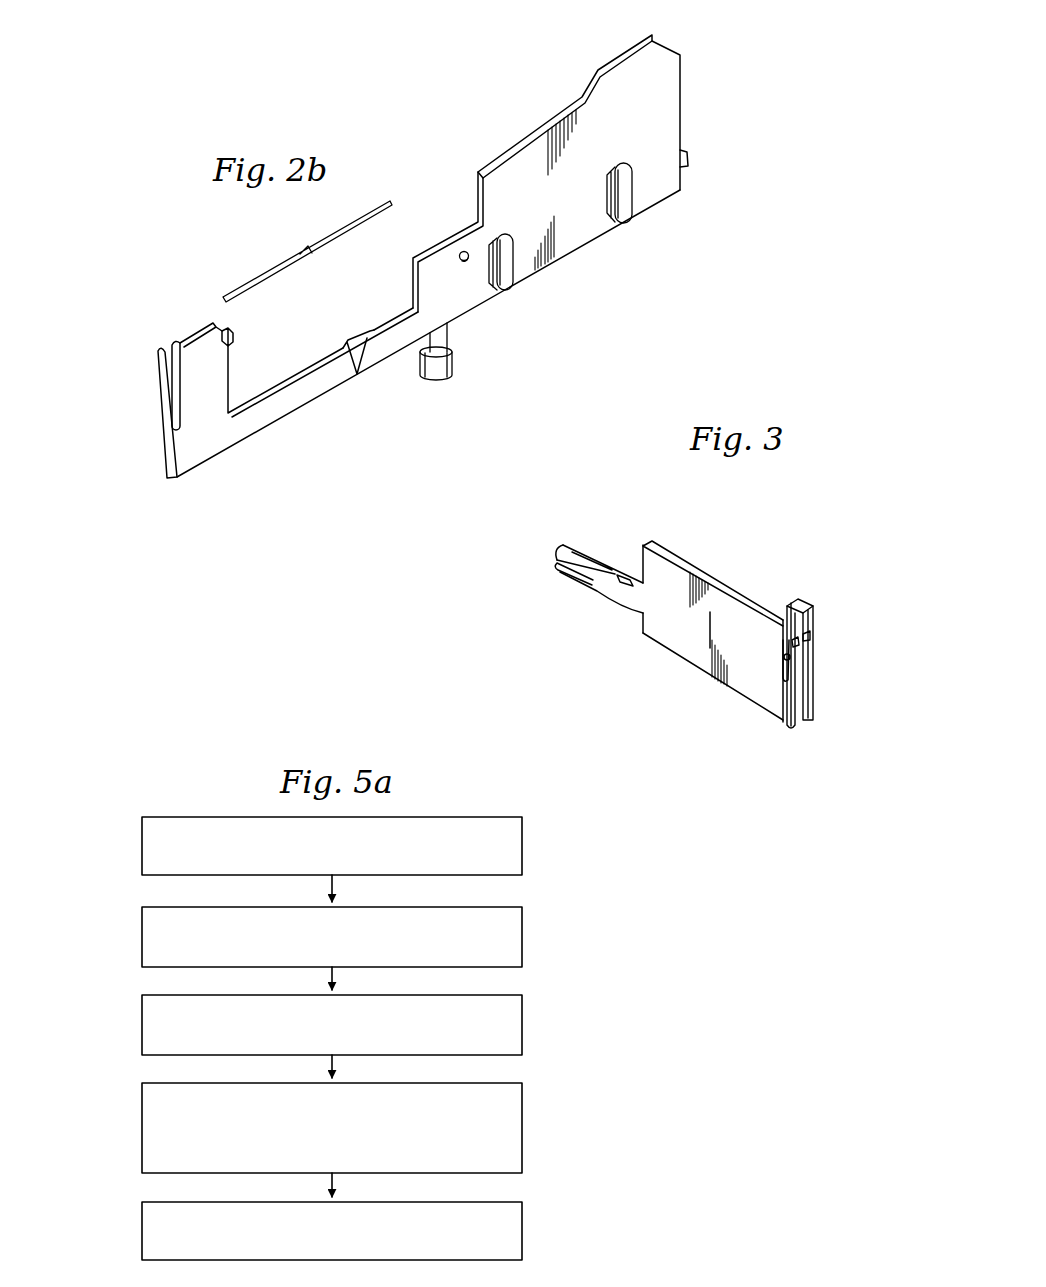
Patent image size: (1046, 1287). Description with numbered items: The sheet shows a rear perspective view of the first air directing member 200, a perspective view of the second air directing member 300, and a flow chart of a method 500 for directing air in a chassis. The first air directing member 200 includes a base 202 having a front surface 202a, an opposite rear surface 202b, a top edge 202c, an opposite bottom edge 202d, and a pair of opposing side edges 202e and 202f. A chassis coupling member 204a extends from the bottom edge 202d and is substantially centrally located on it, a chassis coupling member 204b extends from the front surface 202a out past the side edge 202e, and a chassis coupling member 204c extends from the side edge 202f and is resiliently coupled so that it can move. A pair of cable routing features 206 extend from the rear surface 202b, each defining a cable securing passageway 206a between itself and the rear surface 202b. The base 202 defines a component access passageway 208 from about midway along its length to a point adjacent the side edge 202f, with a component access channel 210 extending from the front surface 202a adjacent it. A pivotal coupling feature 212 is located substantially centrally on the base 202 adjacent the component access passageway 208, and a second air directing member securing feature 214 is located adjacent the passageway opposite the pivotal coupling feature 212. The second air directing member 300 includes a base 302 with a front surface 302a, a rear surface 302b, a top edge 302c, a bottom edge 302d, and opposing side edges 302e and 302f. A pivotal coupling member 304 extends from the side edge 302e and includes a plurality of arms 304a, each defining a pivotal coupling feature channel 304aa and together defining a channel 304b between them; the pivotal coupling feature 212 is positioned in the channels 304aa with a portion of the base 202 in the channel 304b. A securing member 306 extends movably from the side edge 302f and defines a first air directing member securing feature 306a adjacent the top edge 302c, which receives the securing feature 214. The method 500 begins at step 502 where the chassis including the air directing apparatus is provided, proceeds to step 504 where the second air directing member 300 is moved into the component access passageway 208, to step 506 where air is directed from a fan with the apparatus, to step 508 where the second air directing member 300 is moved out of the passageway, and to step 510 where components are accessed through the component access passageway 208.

In FIG. 2B, the first air directing member 200 is at (401, 151).
In FIG. 2B, the base 202 is at (668, 41).
In FIG. 2B, the front surface 202a is at (501, 160).
In FIG. 2B, the rear surface 202b is at (655, 195).
In FIG. 2B, the top edge 202c is at (537, 142).
In FIG. 2B, the bottom edge 202d is at (335, 387).
In FIG. 2B, the side edge 202e is at (681, 112).
In FIG. 2B, the side edge 202f is at (172, 340).
In FIG. 2B, the chassis coupling member 204a is at (452, 360).
In FIG. 2B, the chassis coupling member 204b is at (686, 160).
In FIG. 2B, the chassis coupling member 204c is at (156, 360).
In FIG. 2B, the cable routing feature 206 is at (619, 167).
In FIG. 2B, the cable securing passageway 206a is at (597, 217).
In FIG. 2B, the component access passageway 208 is at (308, 247).
In FIG. 2B, the component access channel 210 is at (350, 337).
In FIG. 2B, the pivotal coupling feature 212 is at (462, 250).
In FIG. 2B, the second air directing member securing feature 214 is at (234, 342).
In FIG. 3, the second air directing member 300 is at (750, 536).
In FIG. 3, the base 302 is at (760, 709).
In FIG. 3, the front surface 302a is at (680, 645).
In FIG. 3, the rear surface 302b is at (733, 590).
In FIG. 3, the top edge 302c is at (692, 572).
In FIG. 3, the bottom edge 302d is at (702, 673).
In FIG. 3, the side edge 302e is at (648, 544).
In FIG. 3, the side edge 302f is at (790, 654).
In FIG. 3, the pivotal coupling member 304 is at (600, 600).
In FIG. 3, the arm 304a is at (603, 554).
In FIG. 3, the pivotal coupling feature channel 304aa is at (553, 558).
In FIG. 3, the channel 304b is at (561, 546).
In FIG. 3, the securing member 306 is at (820, 605).
In FIG. 3, the first air directing member securing feature 306a is at (821, 634).
In FIG. 5A, the method 500 is at (221, 769).
In FIG. 5A, the step 502 is at (142, 845).
In FIG. 5A, the step 504 is at (142, 935).
In FIG. 5A, the step 506 is at (142, 1028).
In FIG. 5A, the step 508 is at (142, 1115).
In FIG. 5A, the step 510 is at (142, 1220).